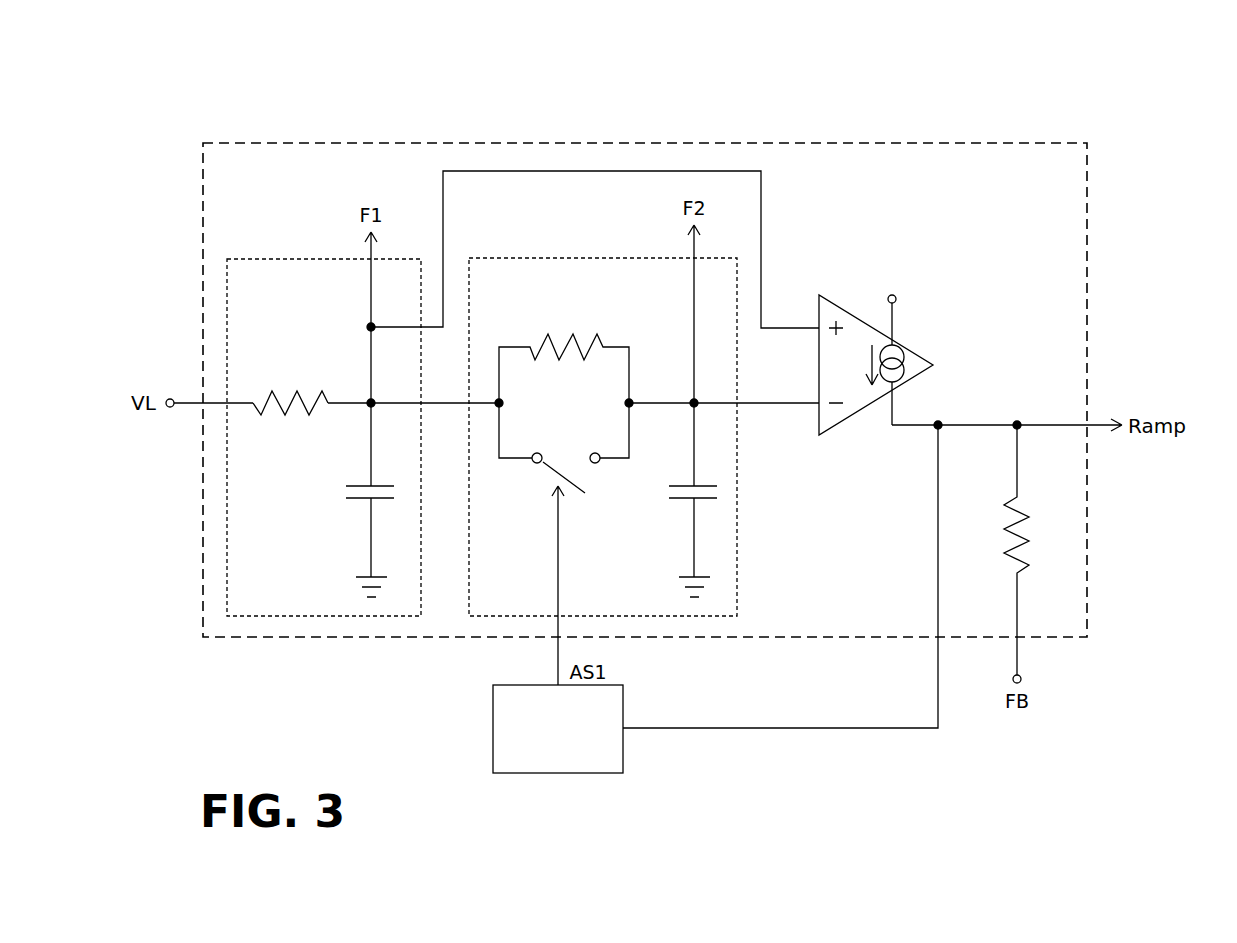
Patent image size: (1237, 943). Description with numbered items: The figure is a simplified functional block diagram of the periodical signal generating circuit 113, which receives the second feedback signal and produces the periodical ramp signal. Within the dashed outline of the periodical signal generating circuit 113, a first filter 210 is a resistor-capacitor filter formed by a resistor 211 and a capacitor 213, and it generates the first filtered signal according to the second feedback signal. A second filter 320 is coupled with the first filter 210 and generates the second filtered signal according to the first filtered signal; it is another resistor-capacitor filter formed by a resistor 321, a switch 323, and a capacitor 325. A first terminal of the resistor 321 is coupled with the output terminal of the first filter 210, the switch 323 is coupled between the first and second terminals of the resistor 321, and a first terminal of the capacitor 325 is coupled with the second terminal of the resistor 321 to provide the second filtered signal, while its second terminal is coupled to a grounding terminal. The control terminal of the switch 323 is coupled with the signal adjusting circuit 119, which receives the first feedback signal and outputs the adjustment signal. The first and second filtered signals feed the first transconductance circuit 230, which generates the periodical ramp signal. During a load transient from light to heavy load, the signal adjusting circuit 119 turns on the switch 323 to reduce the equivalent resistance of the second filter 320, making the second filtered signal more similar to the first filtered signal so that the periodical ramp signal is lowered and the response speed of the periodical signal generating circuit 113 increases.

The periodical signal generating circuit 113 is at (1144, 145).
The first filter 210 is at (324, 400).
The resistor 211 is at (290, 396).
The capacitor 213 is at (350, 490).
The second filter 320 is at (603, 403).
The resistor 321 is at (567, 342).
The switch 323 is at (568, 462).
The capacitor 325 is at (668, 490).
The first transconductance circuit 230 is at (873, 400).
The signal adjusting circuit 119 is at (493, 728).